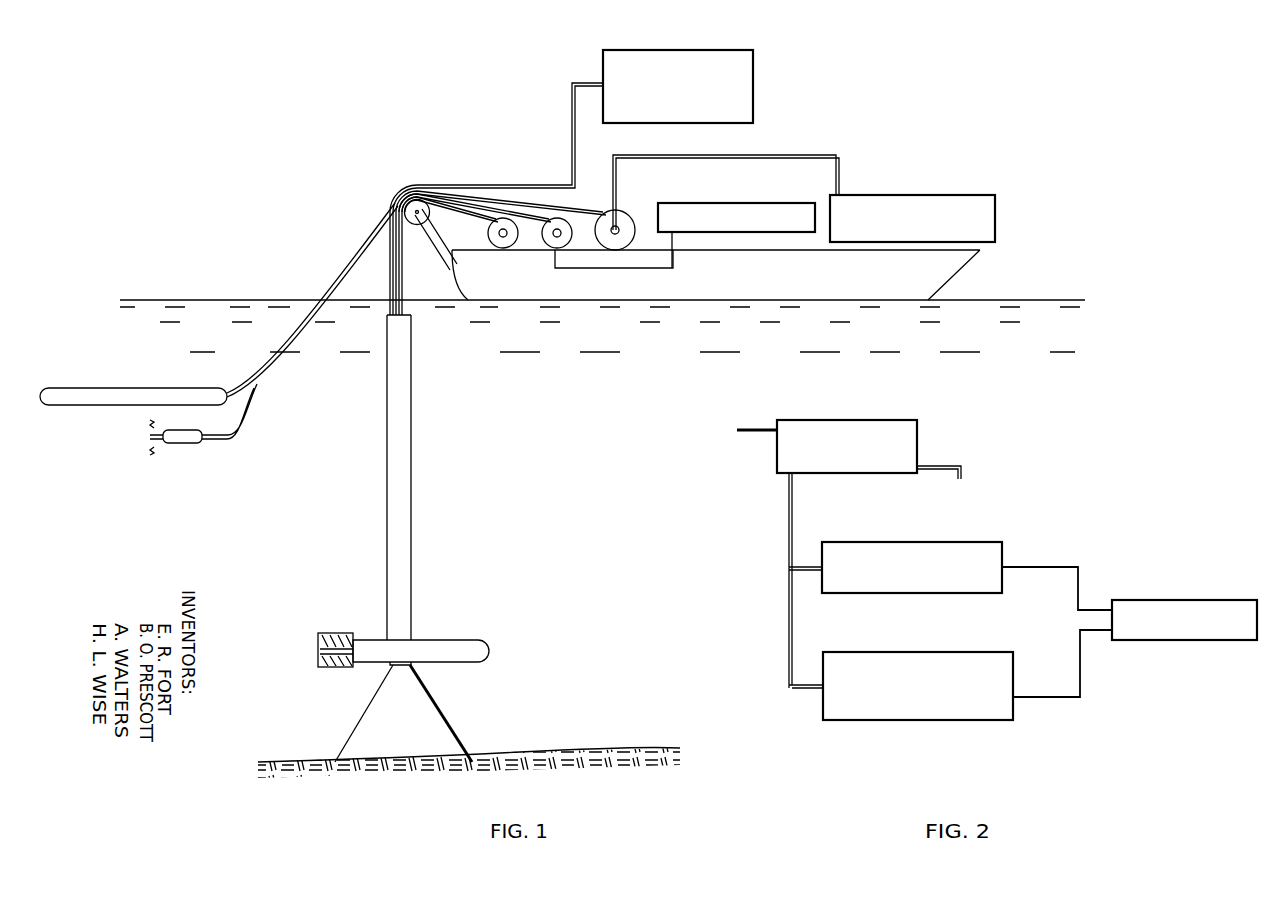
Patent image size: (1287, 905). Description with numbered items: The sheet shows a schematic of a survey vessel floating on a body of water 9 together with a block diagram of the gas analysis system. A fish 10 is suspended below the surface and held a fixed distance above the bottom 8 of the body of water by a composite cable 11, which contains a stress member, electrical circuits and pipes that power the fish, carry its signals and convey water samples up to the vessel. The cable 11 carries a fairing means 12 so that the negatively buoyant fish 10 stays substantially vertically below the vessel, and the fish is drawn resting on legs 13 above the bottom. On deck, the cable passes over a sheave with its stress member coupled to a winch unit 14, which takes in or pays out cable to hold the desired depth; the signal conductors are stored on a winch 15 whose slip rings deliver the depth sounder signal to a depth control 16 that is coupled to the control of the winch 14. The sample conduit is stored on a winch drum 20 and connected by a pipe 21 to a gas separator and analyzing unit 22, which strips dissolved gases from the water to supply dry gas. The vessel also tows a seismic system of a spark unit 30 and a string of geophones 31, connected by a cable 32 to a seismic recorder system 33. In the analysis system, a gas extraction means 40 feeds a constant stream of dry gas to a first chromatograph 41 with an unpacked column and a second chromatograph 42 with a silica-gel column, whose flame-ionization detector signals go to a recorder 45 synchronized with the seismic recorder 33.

In FIG. 1, the bottom 8 is at (503, 762).
In FIG. 1, the body of water 9 is at (990, 300).
In FIG. 1, the fish 10 is at (447, 640).
In FIG. 1, the composite cable 11 is at (404, 285).
In FIG. 1, the fairing means 12 is at (411, 510).
In FIG. 1, the support legs 13 is at (453, 699).
In FIG. 1, the winch unit 14 is at (507, 248).
In FIG. 1, the winch 15 is at (563, 250).
In FIG. 1, the depth control 16 is at (762, 232).
In FIG. 1, the winch drum 20 is at (626, 250).
In FIG. 1, the pipe 21 is at (797, 155).
In FIG. 1, the gas separator and analyzing unit 22 is at (925, 195).
In FIG. 1, the spark unit 30 is at (180, 443).
In FIG. 1, the string of geophones 31 is at (97, 397).
In FIG. 1, the cable 32 is at (462, 185).
In FIG. 1, the seismic recorder system 33 is at (755, 57).
In FIG. 2, the gas extraction means 40 is at (917, 440).
In FIG. 2, the first chromatograph 41 is at (945, 593).
In FIG. 2, the second chromatograph 42 is at (950, 720).
In FIG. 2, the recorder 45 is at (1215, 640).